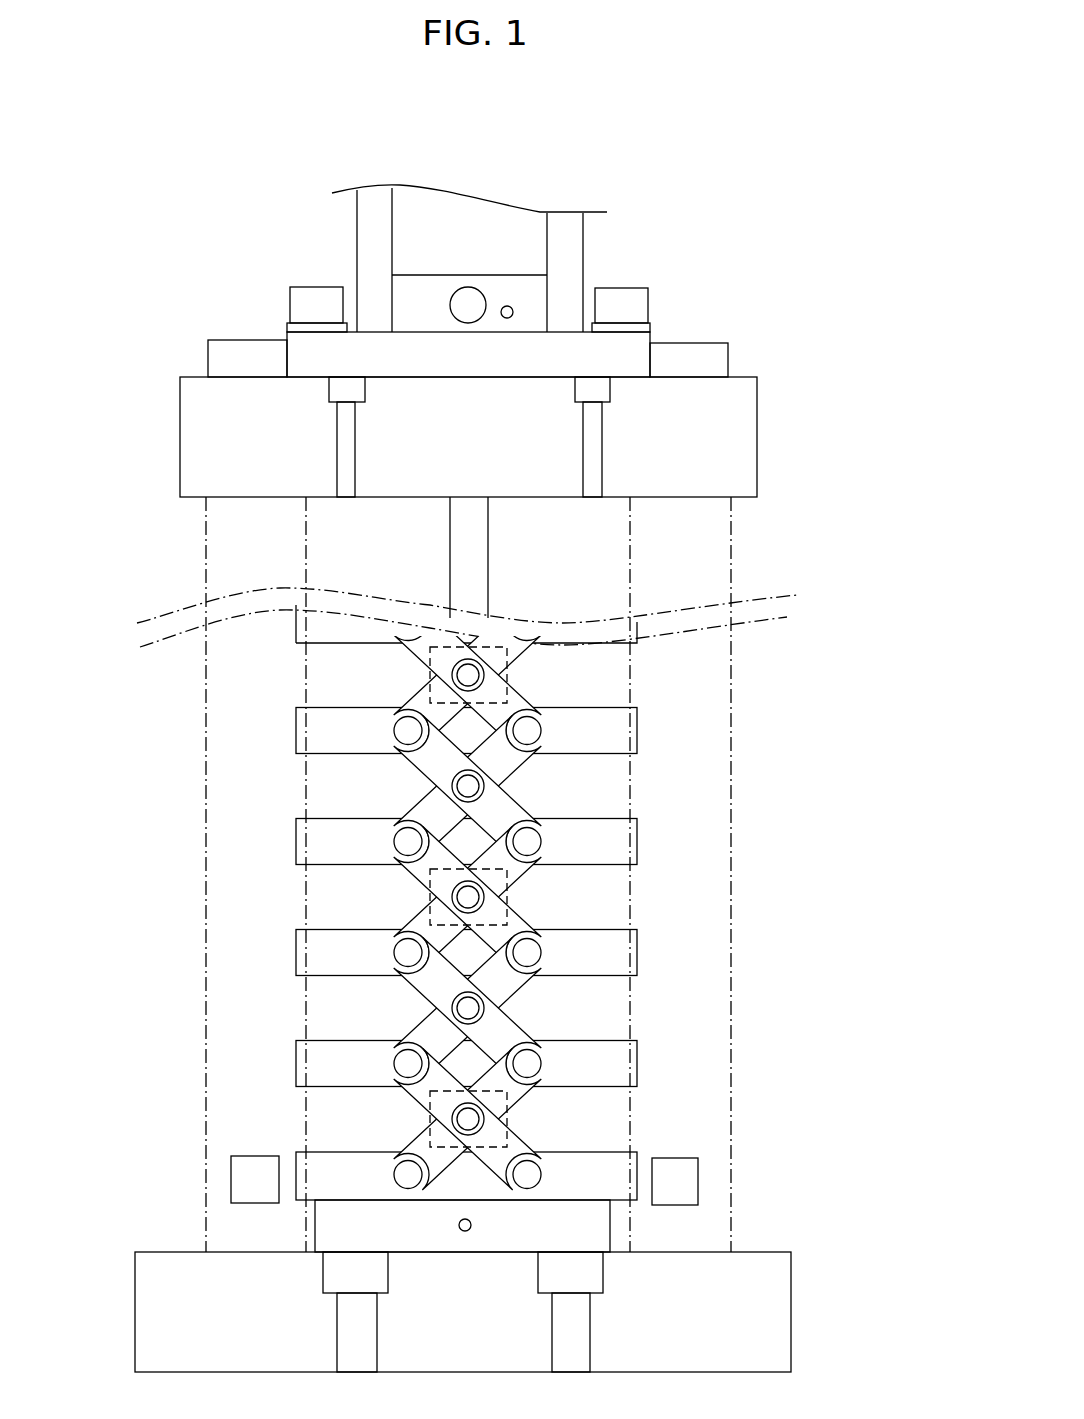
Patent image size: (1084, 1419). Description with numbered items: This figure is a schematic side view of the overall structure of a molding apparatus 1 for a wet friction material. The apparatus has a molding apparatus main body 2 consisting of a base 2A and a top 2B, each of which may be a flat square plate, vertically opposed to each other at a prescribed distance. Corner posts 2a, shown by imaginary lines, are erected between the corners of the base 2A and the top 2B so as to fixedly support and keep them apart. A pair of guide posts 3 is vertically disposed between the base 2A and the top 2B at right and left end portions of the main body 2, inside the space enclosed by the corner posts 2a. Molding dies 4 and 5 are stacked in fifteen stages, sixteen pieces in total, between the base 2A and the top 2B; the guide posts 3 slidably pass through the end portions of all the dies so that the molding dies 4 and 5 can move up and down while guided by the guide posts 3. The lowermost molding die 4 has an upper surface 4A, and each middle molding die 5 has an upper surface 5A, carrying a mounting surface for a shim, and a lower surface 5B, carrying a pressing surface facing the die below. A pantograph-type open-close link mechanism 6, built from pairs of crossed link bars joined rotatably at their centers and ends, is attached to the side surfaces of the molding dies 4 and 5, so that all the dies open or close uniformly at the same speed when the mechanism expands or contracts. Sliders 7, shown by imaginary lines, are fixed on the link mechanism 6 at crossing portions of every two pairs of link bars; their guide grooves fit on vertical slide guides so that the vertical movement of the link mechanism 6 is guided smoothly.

The molding apparatus 1 is at (677, 237).
The molding apparatus main body 2 is at (752, 410).
The base 2A is at (790, 1313).
The top 2B is at (757, 450).
The corner posts 2a is at (220, 678).
The guide posts 3 is at (477, 550).
The molding die 4 is at (635, 1157).
The upper surface 4A is at (590, 1153).
The molding die 5 is at (561, 846).
The upper surface 5A is at (588, 703).
The lower surface 5B is at (585, 757).
The pantograph-type open-close link mechanism 6 is at (413, 765).
The sliders 7 is at (430, 1117).